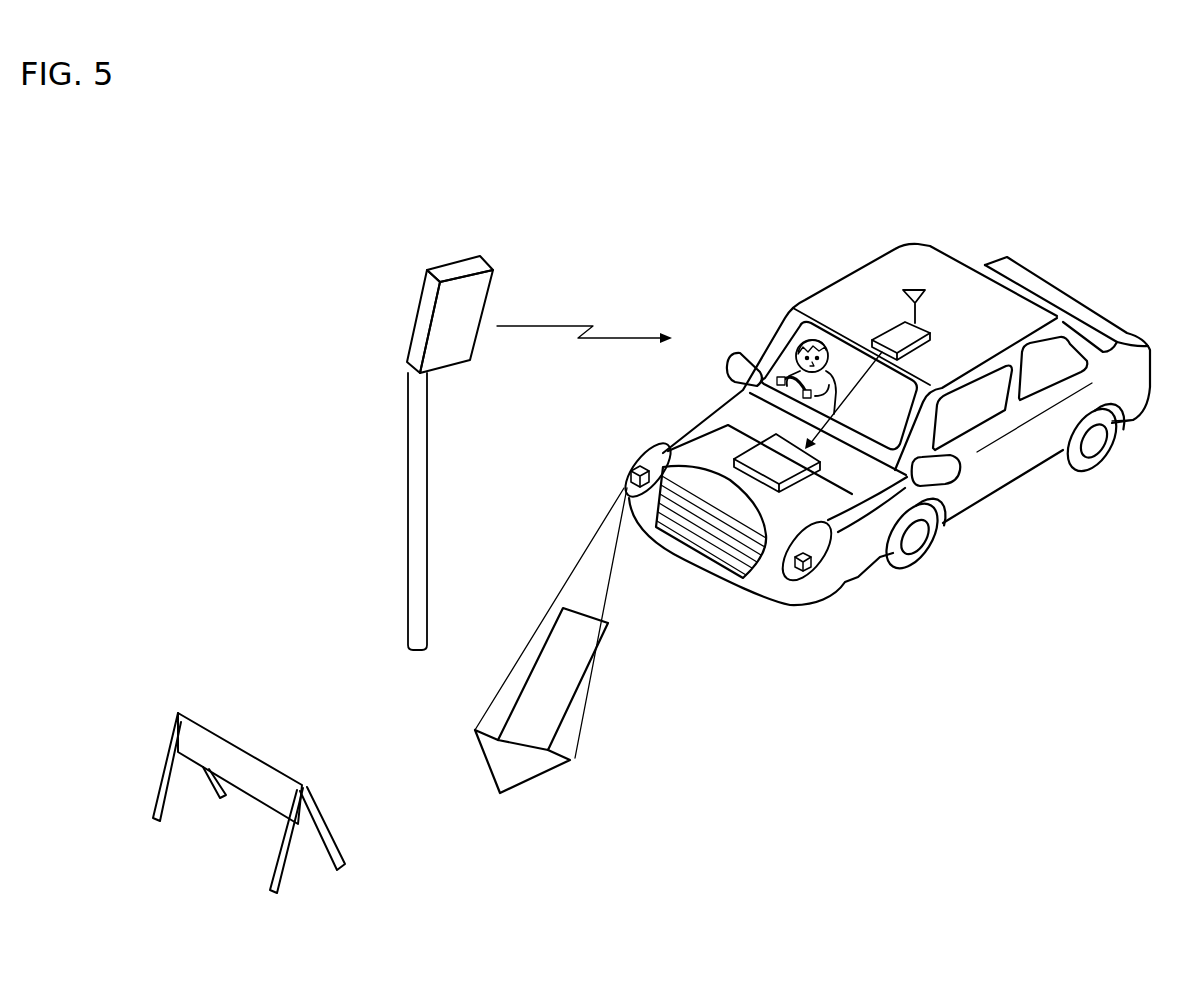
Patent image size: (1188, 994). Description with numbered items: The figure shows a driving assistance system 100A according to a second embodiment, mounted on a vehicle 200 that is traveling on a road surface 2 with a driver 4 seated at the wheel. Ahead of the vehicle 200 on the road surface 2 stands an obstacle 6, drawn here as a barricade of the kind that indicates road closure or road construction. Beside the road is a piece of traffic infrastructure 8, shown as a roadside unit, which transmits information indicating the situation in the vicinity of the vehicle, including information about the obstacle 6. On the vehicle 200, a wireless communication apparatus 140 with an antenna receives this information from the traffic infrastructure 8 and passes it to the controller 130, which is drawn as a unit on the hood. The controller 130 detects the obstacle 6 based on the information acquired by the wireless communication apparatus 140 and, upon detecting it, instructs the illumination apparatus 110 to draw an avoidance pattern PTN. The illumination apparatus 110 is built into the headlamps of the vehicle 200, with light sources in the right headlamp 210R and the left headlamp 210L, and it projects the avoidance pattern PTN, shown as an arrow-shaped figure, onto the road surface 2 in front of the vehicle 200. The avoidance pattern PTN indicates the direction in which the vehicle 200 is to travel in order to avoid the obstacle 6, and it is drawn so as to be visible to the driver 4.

The driving assistance system 100A is at (653, 233).
The traffic infrastructure 8 is at (462, 268).
The obstacle 6 is at (252, 755).
The illumination apparatus 110 is at (626, 460).
The avoidance pattern PTN is at (523, 773).
The road surface 2 is at (660, 712).
The vehicle 200 is at (872, 298).
The driver 4 is at (802, 343).
The wireless communication apparatus 140 is at (913, 332).
The controller 130 is at (787, 467).
The right headlamp 210R is at (657, 448).
The left headlamp 210L is at (821, 545).